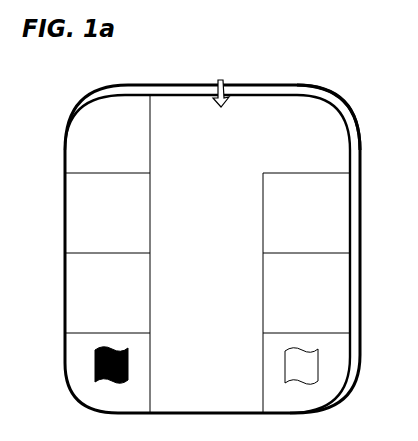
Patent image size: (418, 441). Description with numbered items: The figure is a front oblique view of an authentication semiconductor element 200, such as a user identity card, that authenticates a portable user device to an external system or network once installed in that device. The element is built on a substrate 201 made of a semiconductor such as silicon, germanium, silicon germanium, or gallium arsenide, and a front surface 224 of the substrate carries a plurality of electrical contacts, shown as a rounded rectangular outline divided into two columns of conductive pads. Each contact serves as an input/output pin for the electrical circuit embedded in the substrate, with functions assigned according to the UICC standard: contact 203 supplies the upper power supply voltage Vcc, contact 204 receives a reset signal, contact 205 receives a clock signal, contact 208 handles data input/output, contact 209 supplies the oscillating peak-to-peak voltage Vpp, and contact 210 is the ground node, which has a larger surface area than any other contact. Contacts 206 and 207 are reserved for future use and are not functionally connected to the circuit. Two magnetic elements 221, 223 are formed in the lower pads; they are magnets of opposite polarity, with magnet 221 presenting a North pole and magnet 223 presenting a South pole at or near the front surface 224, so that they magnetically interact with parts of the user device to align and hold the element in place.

The authentication semiconductor element 200 is at (315, 52).
The substrate 201 is at (314, 98).
The front surface 224 is at (232, 82).
The electrical contact 203 is at (80, 147).
The electrical contact 204 is at (80, 224).
The electrical contact 205 is at (80, 294).
The electrical contact 206 is at (80, 363).
The electrical contact 210 is at (340, 152).
The electrical contact 209 is at (340, 217).
The electrical contact 208 is at (340, 297).
The electrical contact 207 is at (340, 363).
The magnetic element 221 is at (97, 378).
The magnetic element 223 is at (318, 378).